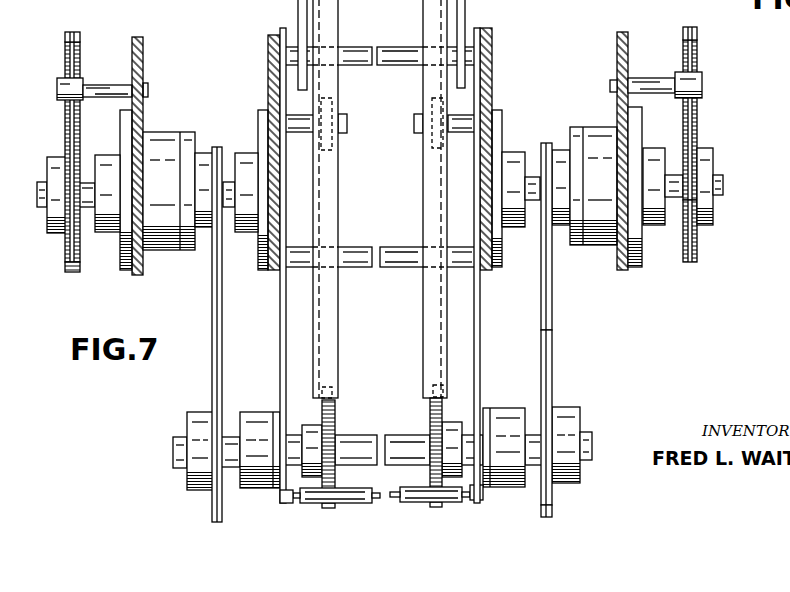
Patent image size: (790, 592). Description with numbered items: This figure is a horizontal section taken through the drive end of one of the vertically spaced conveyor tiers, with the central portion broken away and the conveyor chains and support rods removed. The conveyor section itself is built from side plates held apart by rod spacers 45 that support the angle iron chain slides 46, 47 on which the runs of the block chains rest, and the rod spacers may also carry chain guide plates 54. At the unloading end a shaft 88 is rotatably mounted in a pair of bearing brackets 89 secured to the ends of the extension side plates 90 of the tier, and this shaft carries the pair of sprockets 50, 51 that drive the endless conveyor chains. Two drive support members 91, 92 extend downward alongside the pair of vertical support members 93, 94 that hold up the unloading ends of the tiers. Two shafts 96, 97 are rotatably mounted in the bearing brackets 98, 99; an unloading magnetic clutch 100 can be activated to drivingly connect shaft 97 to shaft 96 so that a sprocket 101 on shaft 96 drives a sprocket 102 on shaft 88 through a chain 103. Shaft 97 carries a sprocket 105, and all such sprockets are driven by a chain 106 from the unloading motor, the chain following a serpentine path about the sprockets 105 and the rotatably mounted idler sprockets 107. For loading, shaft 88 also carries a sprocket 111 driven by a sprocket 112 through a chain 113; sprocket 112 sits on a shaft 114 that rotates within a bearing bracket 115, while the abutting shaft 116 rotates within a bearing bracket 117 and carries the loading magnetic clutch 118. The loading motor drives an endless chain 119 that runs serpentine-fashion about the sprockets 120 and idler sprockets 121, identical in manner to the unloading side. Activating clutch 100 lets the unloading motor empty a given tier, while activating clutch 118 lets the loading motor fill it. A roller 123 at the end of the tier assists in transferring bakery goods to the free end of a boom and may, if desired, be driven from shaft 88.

The rod spacer 45 is at (357, 47).
The angle iron chain slide 46 is at (340, 360).
The angle iron chain slide 47 is at (423, 347).
The sprocket 50 is at (336, 420).
The sprocket 51 is at (430, 415).
The chain guide plate 54 is at (527, 0).
The shaft 88 is at (592, 445).
The bearing bracket 89 is at (263, 412).
The extension side plate 90 is at (280, 325).
The drive support member 91 is at (137, 277).
The drive support member 92 is at (622, 272).
The vertical support member 93 is at (268, 52).
The vertical support member 94 is at (492, 62).
The shaft 96 is at (530, 177).
The shaft 97 is at (722, 185).
The bearing bracket 98 is at (502, 267).
The bearing bracket 99 is at (640, 270).
The unloading magnetic clutch 100 is at (597, 248).
The sprocket 101 is at (548, 143).
The sprocket 102 is at (554, 505).
The chain 103 is at (552, 335).
The sprocket 105 is at (697, 258).
The chain 106 is at (690, 30).
The idler sprocket 107 is at (697, 62).
The sprocket 111 is at (190, 492).
The sprocket 112 is at (210, 153).
The chain 113 is at (212, 323).
The shaft 114 is at (230, 182).
The bearing bracket 115 is at (258, 252).
The shaft 116 is at (42, 182).
The bearing bracket 117 is at (122, 265).
The magnetic clutch 118 is at (183, 132).
The endless chain 119 is at (71, 31).
The sprocket 120 is at (72, 275).
The idler sprocket 121 is at (82, 44).
The roller 123 is at (392, 503).